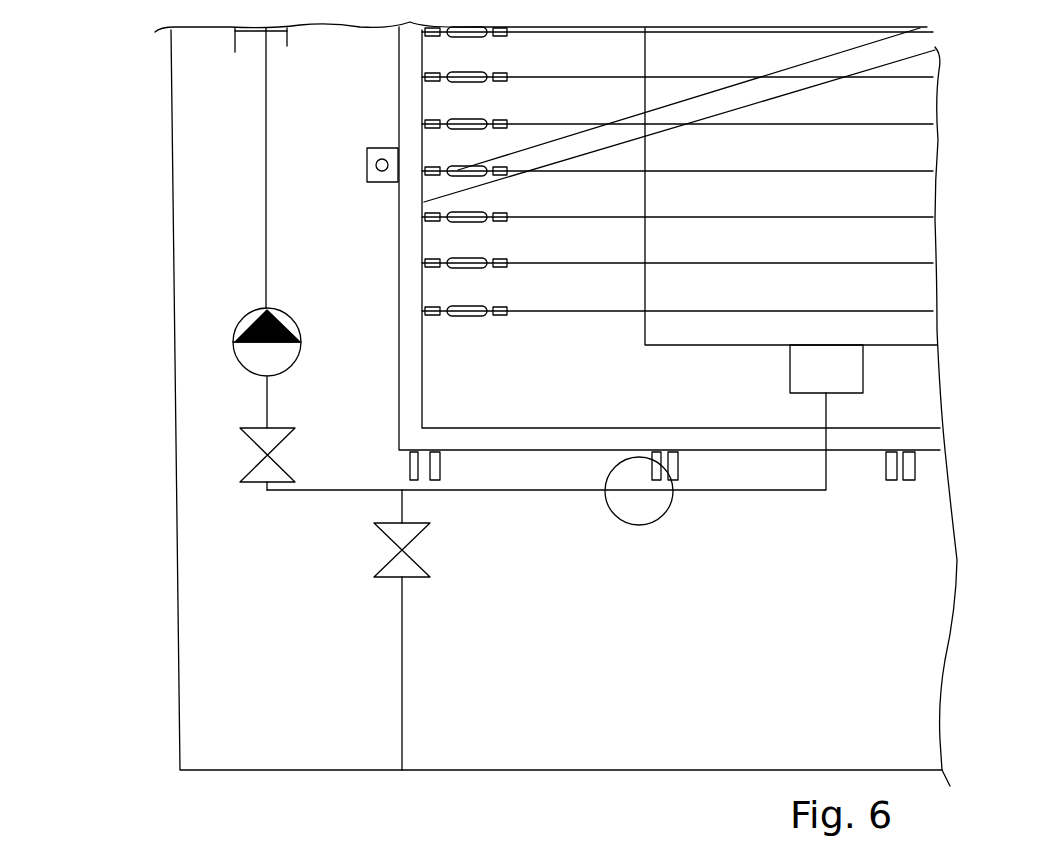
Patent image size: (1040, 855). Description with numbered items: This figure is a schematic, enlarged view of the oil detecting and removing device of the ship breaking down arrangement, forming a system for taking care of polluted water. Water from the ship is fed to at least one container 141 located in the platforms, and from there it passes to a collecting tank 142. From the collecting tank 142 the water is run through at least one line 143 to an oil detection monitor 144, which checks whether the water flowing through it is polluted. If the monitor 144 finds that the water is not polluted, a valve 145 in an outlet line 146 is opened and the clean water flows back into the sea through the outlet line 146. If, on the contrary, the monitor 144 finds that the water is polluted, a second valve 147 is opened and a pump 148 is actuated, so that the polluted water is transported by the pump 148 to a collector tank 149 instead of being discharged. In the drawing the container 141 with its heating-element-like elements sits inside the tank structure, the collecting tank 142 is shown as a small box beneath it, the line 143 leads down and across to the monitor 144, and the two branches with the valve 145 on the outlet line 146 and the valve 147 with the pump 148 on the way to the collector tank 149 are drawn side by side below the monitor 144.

The container 141 is at (917, 217).
The collecting tank 142 is at (852, 373).
The line 143 is at (810, 490).
The oil detection monitor 144 is at (647, 512).
The valve 145 is at (410, 567).
The outlet line 146 is at (407, 695).
The valve 147 is at (260, 473).
The pump 148 is at (245, 358).
The collector tank 149 is at (230, 42).